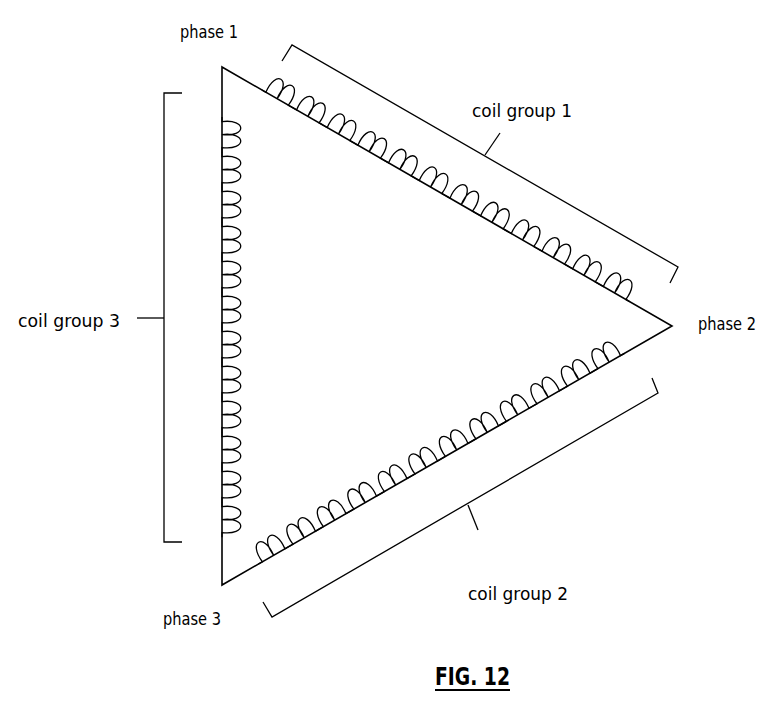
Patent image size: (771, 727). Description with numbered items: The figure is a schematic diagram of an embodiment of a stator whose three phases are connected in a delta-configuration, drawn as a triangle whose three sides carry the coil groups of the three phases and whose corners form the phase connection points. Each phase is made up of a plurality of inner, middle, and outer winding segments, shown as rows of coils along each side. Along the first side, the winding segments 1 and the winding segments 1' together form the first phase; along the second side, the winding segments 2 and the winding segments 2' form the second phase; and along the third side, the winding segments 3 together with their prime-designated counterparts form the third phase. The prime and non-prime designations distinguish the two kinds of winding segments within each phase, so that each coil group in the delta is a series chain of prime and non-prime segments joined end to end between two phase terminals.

The winding segment of the first phase 1 is at (450, 197).
The winding segment of the first phase (prime) 1' is at (435, 189).
The winding segment of the second phase 2 is at (391, 486).
The winding segment of the second phase (prime) 2' is at (483, 432).
The winding segment of the third phase 3 is at (247, 309).